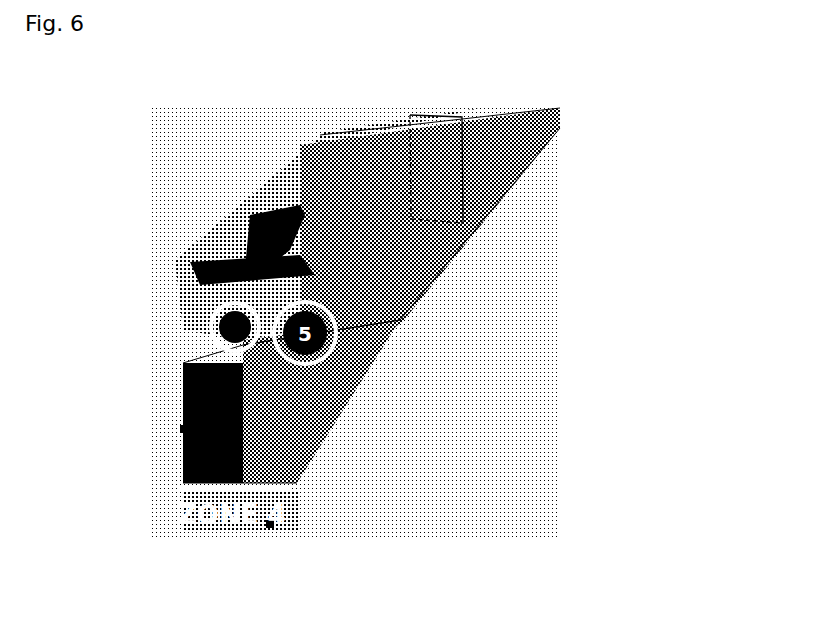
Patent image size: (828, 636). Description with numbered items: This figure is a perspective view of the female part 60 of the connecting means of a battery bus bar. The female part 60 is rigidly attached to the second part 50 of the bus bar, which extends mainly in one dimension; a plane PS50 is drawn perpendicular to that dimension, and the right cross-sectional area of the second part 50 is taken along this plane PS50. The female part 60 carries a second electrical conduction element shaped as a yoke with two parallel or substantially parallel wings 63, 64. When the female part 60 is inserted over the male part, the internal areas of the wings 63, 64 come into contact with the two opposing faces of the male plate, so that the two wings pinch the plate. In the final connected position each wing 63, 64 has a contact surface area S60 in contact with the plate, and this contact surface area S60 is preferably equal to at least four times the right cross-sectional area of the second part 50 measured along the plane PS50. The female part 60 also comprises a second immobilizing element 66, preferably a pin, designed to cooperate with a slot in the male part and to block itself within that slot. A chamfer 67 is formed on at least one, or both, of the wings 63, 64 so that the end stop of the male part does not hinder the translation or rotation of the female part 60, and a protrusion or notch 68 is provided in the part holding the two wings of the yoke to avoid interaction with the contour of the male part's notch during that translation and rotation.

The second part of the bus bar 50 is at (490, 186).
The plane perpendicular to the main dimension of the second part PS50 is at (478, 109).
The female part 60 is at (422, 434).
The contact surface area S60 is at (180, 430).
The wing 63 is at (316, 407).
The wing 64 is at (170, 381).
The second immobilizing element 66 is at (387, 357).
The chamfer 67 is at (203, 277).
The protrusion or notch 68 is at (292, 212).